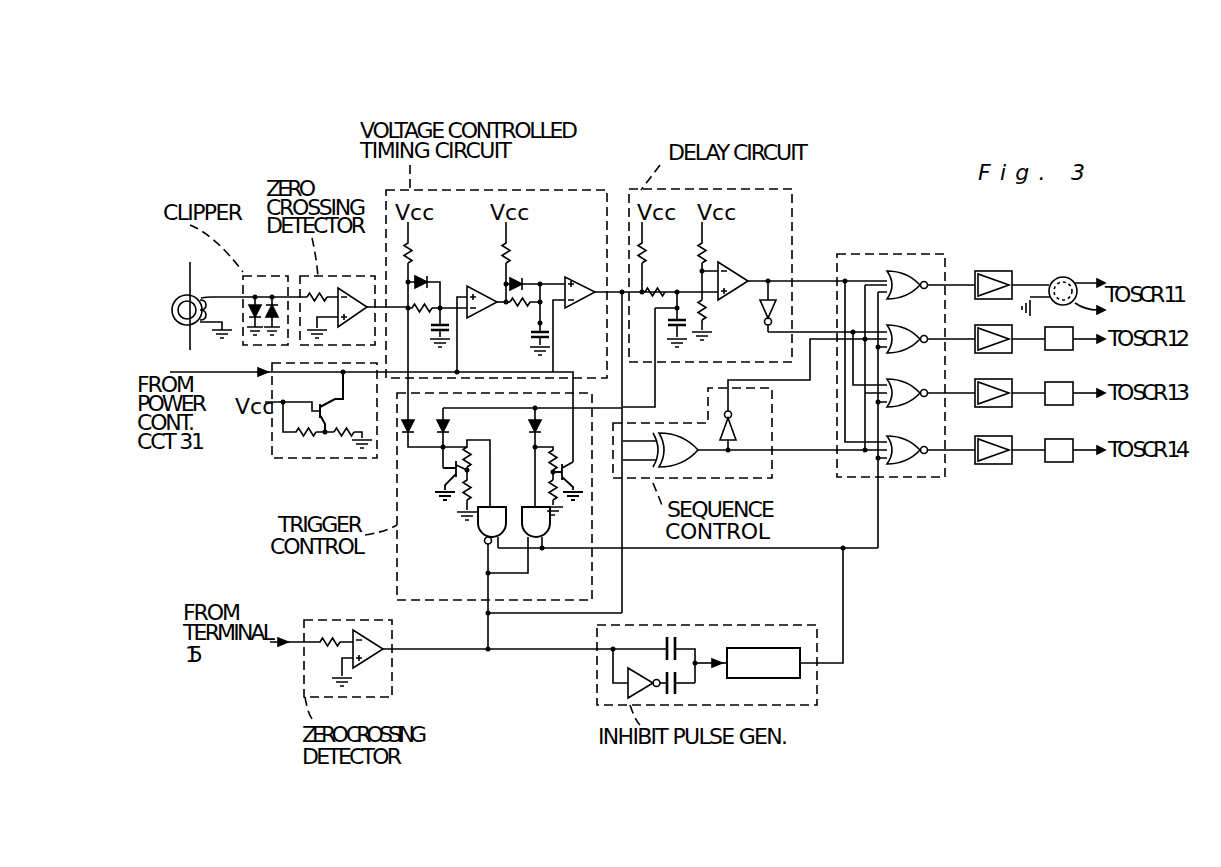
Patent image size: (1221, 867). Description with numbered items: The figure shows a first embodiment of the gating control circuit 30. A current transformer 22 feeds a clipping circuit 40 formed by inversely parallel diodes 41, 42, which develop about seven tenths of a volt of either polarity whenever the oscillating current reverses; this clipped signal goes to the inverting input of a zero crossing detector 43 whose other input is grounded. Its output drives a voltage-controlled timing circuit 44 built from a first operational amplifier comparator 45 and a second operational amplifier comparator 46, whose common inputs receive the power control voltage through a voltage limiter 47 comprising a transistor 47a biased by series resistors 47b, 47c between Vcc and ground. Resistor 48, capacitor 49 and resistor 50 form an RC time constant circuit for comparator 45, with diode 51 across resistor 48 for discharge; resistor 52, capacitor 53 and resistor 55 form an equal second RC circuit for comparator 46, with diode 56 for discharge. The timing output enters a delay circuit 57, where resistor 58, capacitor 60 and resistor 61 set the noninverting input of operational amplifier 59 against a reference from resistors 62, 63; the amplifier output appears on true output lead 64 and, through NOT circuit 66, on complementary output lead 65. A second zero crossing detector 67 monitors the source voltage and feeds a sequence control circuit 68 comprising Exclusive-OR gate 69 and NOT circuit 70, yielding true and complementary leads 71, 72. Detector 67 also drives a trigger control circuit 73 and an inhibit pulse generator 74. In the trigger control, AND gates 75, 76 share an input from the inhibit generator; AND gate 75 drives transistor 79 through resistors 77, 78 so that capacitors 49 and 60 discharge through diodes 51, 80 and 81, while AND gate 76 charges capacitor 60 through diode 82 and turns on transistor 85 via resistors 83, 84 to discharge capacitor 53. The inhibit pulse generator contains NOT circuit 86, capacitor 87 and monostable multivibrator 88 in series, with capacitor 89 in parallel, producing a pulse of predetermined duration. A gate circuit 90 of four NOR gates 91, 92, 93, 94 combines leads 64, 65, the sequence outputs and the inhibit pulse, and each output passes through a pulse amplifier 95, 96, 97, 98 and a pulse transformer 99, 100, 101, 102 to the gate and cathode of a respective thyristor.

The current transformer 22 is at (182, 298).
The gating control circuit 30 is at (628, 164).
The clipping circuit 40 is at (268, 346).
The diode 41 is at (250, 312).
The diode 42 is at (276, 300).
The zero crossing detector 43 is at (351, 276).
The voltage-controlled timing circuit 44 is at (536, 190).
The first operational amplifier comparator 45 is at (485, 291).
The second operational amplifier comparator 46 is at (591, 298).
The voltage limiter 47 is at (272, 459).
The transistor 47a is at (322, 405).
The resistor 47b is at (298, 438).
The resistor 47c is at (337, 438).
The resistor 48 is at (420, 315).
The capacitor 49 is at (449, 331).
The resistor 50 is at (411, 250).
The diode 51 is at (427, 277).
The resistor 52 is at (517, 307).
The capacitor 53 is at (550, 338).
The resistor 55 is at (510, 250).
The diode 56 is at (526, 278).
The delay circuit 57 is at (793, 202).
The resistor 58 is at (657, 288).
The operational amplifier 59 is at (740, 271).
The capacitor 60 is at (686, 328).
The resistor 61 is at (645, 251).
The resistor 62 is at (700, 254).
The resistor 63 is at (709, 312).
The true output lead 64 is at (813, 279).
The complementary output lead 65 is at (815, 331).
The NOT circuit 66 is at (765, 327).
The second zero crossing detector 67 is at (392, 688).
The sequence control circuit 68 is at (773, 476).
The Exclusive-OR gate 69 is at (697, 457).
The NOT circuit 70 is at (738, 436).
The true output lead 71 is at (800, 450).
The complementary output lead 72 is at (790, 380).
The trigger control circuit 73 is at (397, 572).
The inhibit pulse generator 74 is at (795, 705).
The AND gate 75 is at (478, 535).
The AND gate 76 is at (550, 530).
The resistor 77 is at (476, 458).
The resistor 78 is at (462, 494).
The transistor 79 is at (452, 470).
The diode 80 is at (405, 432).
The diode 81 is at (452, 428).
The diode 82 is at (539, 428).
The resistor 83 is at (547, 458).
The resistor 84 is at (549, 490).
The transistor 85 is at (575, 475).
The NOT circuit 86 is at (627, 688).
The capacitor 87 is at (677, 696).
The monostable multivibrator 88 is at (753, 647).
The capacitor 89 is at (672, 636).
The gate circuit 90 is at (855, 254).
The NOR gate 91 is at (930, 270).
The NOR gate 92 is at (930, 327).
The NOR gate 93 is at (930, 381).
The NOR gate 94 is at (930, 438).
The pulse amplifier 95 is at (1010, 271).
The pulse amplifier 96 is at (1000, 353).
The pulse amplifier 97 is at (998, 407).
The pulse amplifier 98 is at (995, 464).
The pulse transformer 99 is at (1066, 277).
The pulse transformer 100 is at (1060, 351).
The pulse transformer 101 is at (1060, 406).
The pulse transformer 102 is at (1060, 463).